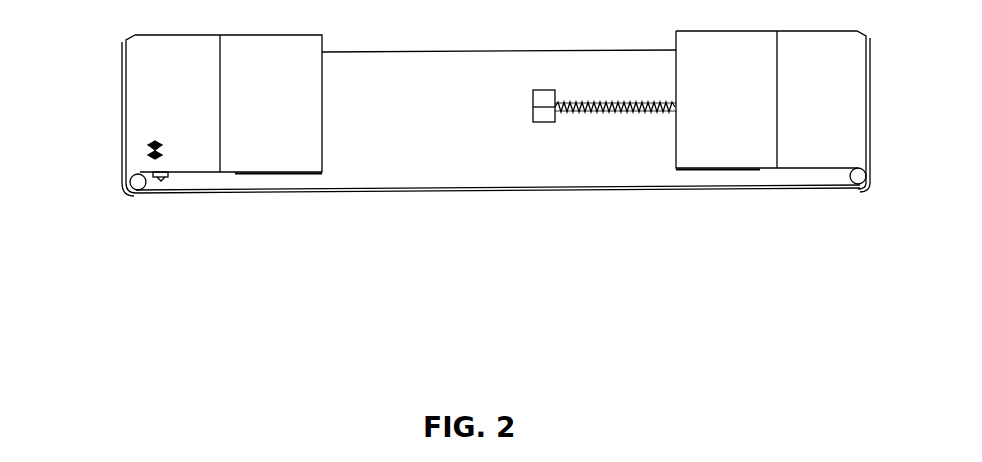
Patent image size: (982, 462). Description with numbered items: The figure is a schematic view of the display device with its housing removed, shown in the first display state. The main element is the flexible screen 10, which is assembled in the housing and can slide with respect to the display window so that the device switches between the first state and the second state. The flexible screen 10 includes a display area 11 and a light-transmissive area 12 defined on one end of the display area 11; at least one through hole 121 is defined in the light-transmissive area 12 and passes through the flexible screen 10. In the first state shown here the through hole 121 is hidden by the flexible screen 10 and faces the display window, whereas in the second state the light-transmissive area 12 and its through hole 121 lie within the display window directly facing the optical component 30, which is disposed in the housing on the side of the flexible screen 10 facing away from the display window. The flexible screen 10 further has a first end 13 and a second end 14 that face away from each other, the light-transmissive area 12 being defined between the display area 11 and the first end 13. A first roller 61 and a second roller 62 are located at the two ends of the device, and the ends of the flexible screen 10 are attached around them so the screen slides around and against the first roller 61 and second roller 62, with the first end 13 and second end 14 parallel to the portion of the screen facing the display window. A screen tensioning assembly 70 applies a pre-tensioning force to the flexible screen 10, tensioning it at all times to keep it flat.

The flexible screen 10 is at (458, 153).
The display area 11 is at (369, 192).
The light-transmissive area 12 is at (187, 158).
The first end 13 is at (282, 170).
The second end 14 is at (717, 170).
The optical component 30 is at (162, 181).
The first roller 61 is at (140, 188).
The second roller 62 is at (862, 184).
The screen tensioning assembly 70 is at (598, 100).
The through hole 121 is at (146, 145).